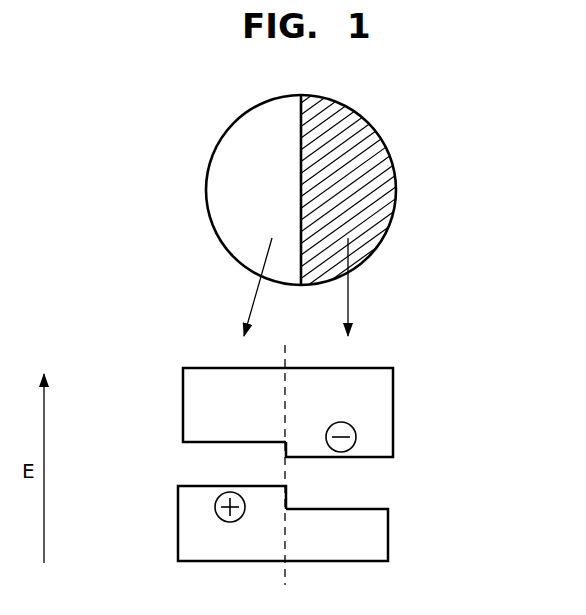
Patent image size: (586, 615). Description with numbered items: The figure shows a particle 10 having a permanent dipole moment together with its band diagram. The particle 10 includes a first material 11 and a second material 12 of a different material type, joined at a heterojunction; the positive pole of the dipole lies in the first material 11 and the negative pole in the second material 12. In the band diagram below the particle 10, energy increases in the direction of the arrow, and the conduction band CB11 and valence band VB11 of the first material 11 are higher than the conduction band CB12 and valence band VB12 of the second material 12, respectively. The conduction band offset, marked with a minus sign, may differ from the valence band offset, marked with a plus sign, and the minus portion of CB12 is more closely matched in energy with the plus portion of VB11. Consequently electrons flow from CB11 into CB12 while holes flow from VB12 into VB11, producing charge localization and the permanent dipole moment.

The particle 10 is at (302, 155).
The first material 11 is at (207, 191).
The second material 12 is at (397, 192).
The conduction band of the first material CB11 is at (182, 441).
The conduction band of the second material CB12 is at (394, 447).
The valence band of the first material VB11 is at (177, 495).
The valence band of the second material VB12 is at (389, 535).